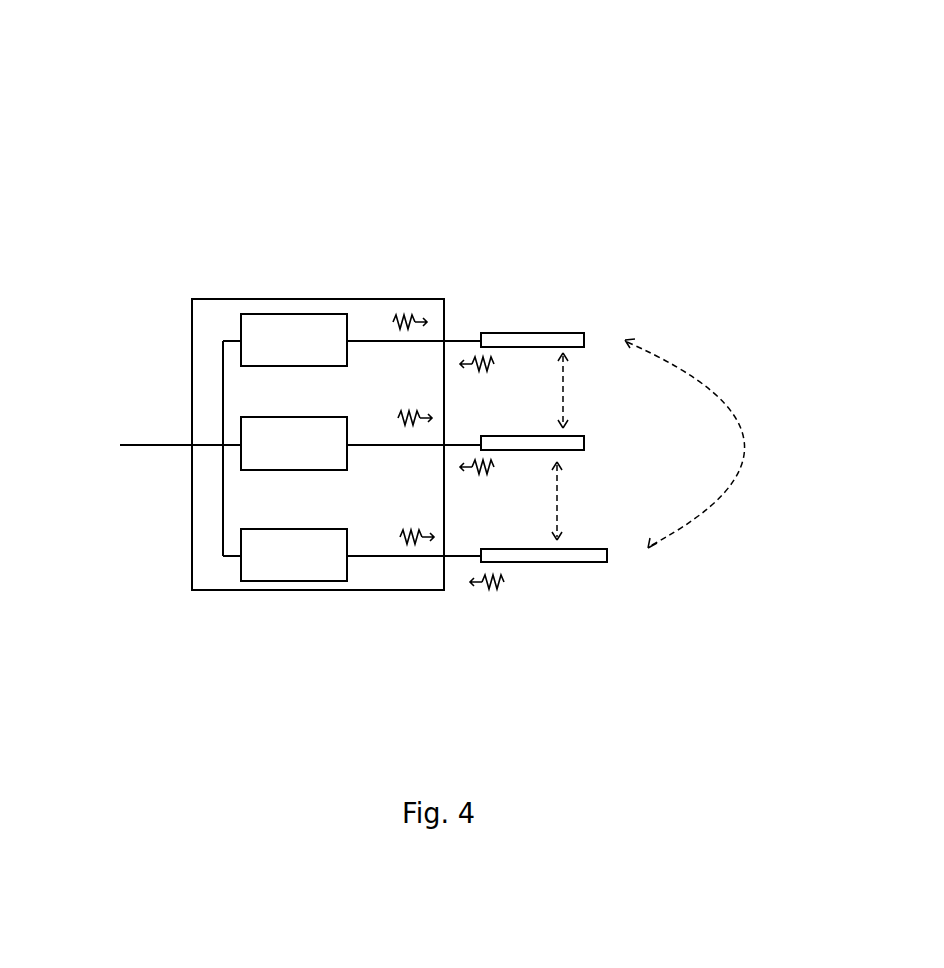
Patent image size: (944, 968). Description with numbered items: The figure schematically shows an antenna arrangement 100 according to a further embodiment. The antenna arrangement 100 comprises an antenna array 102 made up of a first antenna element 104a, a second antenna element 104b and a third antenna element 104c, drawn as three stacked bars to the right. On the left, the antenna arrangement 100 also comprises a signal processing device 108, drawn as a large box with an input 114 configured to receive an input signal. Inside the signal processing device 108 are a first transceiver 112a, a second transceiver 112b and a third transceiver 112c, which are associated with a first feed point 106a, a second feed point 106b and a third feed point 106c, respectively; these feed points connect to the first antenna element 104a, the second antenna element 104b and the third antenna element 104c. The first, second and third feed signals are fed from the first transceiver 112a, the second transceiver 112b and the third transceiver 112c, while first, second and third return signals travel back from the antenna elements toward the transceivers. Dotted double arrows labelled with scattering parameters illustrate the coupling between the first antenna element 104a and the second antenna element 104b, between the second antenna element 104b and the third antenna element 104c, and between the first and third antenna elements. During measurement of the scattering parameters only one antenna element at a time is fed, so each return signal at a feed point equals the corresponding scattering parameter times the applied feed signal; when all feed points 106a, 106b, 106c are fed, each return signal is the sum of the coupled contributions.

The antenna arrangement 100 is at (122, 92).
The antenna array 102 is at (690, 252).
The first antenna element 104a is at (581, 333).
The second antenna element 104b is at (578, 449).
The third antenna element 104c is at (592, 562).
The first feed point 106a is at (443, 340).
The second feed point 106b is at (444, 444).
The third feed point 106c is at (444, 555).
The signal processing device 108 is at (243, 299).
The first transceiver 112a is at (294, 340).
The second transceiver 112b is at (294, 443).
The third transceiver 112c is at (294, 555).
The input 114 is at (190, 445).